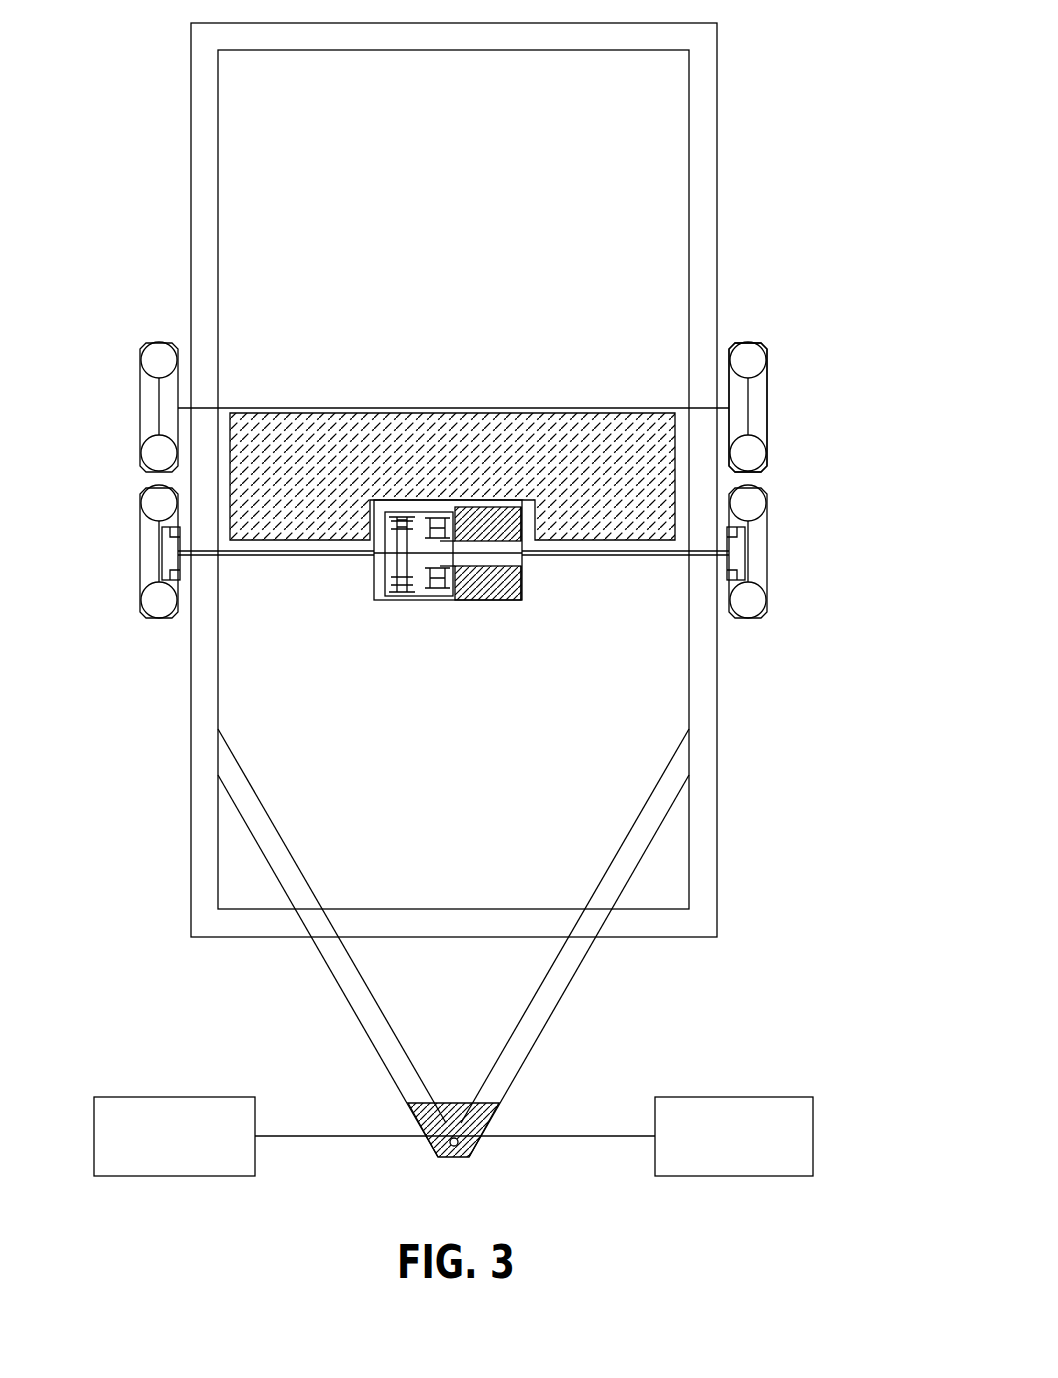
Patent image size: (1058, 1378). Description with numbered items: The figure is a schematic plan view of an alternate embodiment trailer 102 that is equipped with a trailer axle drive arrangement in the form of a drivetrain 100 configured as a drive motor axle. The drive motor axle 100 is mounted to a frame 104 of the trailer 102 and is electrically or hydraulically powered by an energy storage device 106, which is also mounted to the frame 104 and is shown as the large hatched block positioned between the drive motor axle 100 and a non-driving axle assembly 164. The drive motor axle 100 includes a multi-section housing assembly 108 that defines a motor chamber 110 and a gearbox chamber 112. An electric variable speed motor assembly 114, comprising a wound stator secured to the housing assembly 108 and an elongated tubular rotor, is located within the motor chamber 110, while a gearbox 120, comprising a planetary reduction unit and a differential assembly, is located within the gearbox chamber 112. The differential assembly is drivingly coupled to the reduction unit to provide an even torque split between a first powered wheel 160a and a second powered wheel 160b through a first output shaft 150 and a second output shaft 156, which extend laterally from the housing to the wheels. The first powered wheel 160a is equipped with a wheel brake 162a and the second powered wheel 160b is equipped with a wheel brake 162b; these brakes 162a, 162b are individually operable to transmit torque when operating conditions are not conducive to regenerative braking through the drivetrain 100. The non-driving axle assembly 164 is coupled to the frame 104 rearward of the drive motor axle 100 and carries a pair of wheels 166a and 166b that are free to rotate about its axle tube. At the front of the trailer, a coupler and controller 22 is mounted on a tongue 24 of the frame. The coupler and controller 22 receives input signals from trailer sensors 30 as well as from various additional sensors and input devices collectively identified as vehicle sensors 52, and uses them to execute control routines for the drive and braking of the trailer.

The coupler and controller 22 is at (448, 1142).
The tongue 24 is at (378, 1046).
The trailer sensors 30 is at (214, 1100).
The vehicle sensors 52 is at (808, 1103).
The drivetrain 100 is at (498, 518).
The trailer 102 is at (724, 132).
The frame 104 is at (703, 78).
The energy storage device 106 is at (297, 418).
The multi-section housing assembly 108 is at (488, 606).
The motor chamber 110 is at (519, 567).
The gearbox chamber 112 is at (405, 600).
The electric variable speed motor assembly 114 is at (512, 598).
The gearbox 120 is at (412, 506).
The first output shaft 150 is at (292, 560).
The second output shaft 156 is at (645, 558).
The first powered wheel 160a is at (158, 503).
The second powered wheel 160b is at (757, 500).
The wheel brake 162a is at (168, 573).
The wheel brake 162b is at (742, 578).
The non-driving axle assembly 164 is at (555, 403).
The wheel 166a is at (154, 348).
The wheel 166b is at (750, 352).